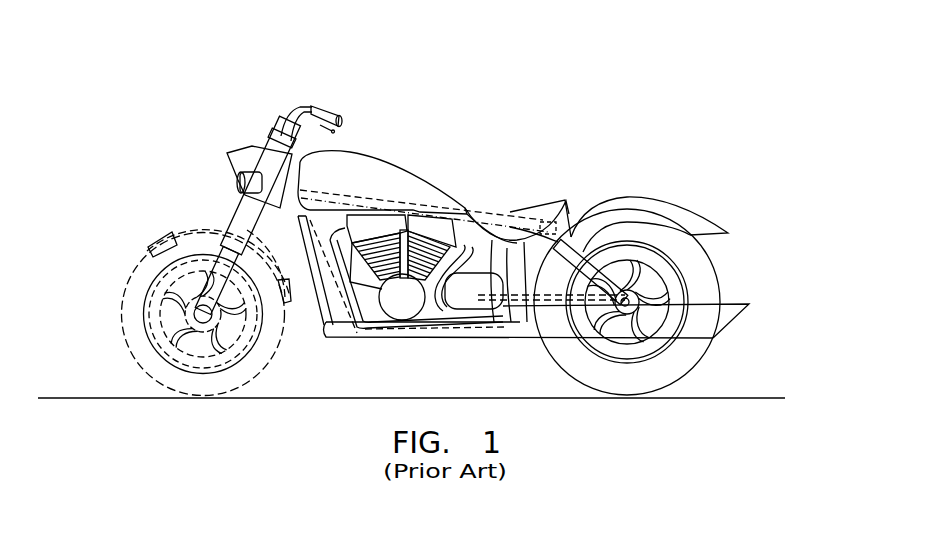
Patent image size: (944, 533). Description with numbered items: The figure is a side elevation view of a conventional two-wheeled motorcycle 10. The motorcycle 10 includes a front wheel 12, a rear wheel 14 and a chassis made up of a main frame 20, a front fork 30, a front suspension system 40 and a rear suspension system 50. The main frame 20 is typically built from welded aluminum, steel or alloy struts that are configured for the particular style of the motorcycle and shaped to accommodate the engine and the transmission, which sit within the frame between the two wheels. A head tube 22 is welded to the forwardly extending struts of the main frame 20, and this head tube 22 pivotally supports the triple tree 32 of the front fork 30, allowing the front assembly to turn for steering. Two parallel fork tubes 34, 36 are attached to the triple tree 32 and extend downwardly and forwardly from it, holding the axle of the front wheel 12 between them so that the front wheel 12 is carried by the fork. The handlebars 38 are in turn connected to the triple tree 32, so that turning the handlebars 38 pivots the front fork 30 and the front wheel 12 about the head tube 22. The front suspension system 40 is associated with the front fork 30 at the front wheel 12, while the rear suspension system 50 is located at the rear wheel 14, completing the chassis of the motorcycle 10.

The motorcycle 10 is at (259, 68).
The front wheel 12 is at (125, 271).
The rear wheel 14 is at (730, 270).
The main frame 20 is at (366, 196).
The head tube 22 is at (268, 165).
The front fork 30 is at (236, 213).
The triple tree 32 is at (266, 125).
The fork tube 34 is at (186, 256).
The fork tube 36 is at (219, 266).
The handlebars 38 is at (298, 108).
The front suspension system 40 is at (261, 185).
The rear suspension system 50 is at (628, 273).